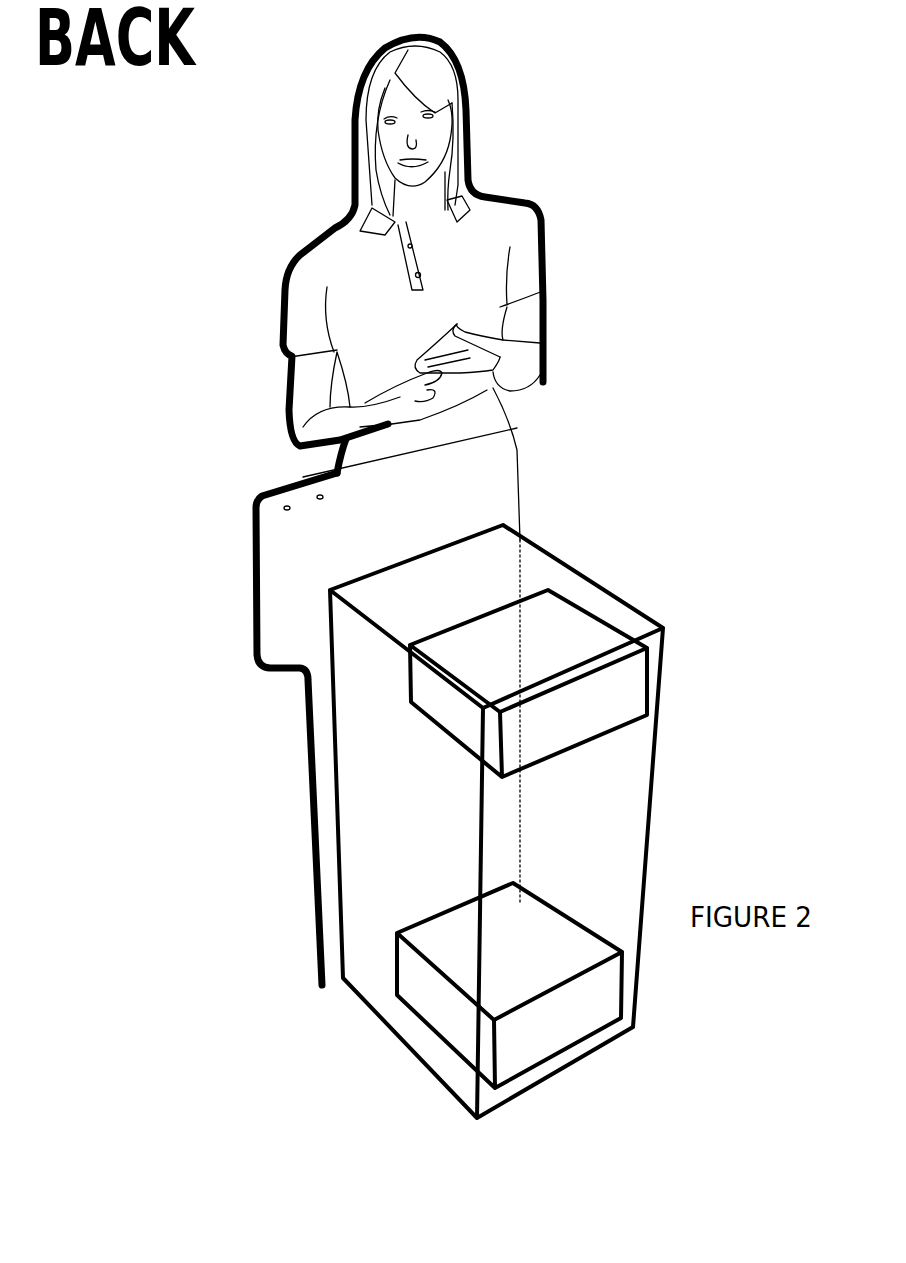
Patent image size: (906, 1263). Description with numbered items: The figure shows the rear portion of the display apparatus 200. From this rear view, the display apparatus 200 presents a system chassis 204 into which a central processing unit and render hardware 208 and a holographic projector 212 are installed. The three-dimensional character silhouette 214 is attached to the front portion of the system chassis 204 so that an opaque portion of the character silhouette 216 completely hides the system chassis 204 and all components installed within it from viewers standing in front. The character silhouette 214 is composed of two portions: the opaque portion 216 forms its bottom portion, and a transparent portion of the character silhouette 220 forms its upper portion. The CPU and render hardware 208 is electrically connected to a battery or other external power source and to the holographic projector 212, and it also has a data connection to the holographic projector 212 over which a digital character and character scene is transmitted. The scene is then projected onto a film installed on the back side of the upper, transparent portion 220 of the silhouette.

The display apparatus 200 is at (718, 222).
The system chassis 204 is at (378, 771).
The CPU and render hardware 208 is at (443, 1002).
The holographic projector 212 is at (628, 693).
The 3D character silhouette 214 is at (280, 287).
The opaque portion of the 3D character silhouette 216 is at (247, 530).
The transparent portion of the 3D character silhouette 220 is at (472, 127).